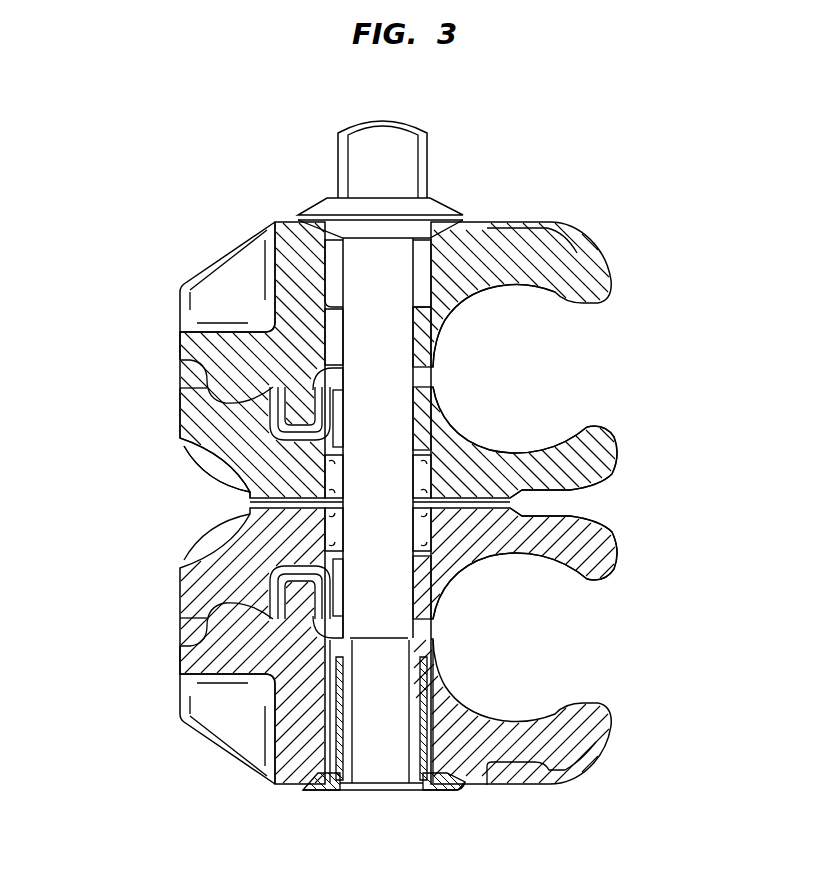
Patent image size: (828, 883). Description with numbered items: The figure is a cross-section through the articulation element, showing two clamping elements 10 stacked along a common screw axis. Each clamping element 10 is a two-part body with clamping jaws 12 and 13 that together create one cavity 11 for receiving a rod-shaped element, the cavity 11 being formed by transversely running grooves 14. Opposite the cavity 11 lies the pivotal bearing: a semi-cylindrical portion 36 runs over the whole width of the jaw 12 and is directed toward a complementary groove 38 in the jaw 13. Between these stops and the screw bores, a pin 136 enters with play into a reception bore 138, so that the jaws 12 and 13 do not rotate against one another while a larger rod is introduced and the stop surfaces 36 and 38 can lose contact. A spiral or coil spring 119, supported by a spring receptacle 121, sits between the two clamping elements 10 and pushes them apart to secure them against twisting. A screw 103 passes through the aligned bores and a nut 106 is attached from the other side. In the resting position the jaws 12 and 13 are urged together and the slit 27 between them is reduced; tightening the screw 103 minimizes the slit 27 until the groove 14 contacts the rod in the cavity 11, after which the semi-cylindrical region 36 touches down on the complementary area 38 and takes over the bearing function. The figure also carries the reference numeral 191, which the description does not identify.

The clamping element 10 is at (132, 294).
The cavity 11 is at (609, 339).
The clamping jaw 12 is at (557, 248).
The clamping jaw 13 is at (608, 460).
The groove 14 is at (553, 292).
The slit 27 is at (433, 628).
The semi-cylindrical portion 36 is at (205, 380).
The complementary groove 38 is at (185, 417).
The screw 103 is at (428, 156).
The nut 106 is at (306, 790).
The spiral or coil spring 119 is at (462, 430).
The spring receptacle 121 is at (462, 574).
The pin 136 is at (267, 340).
The reception bore 138 is at (228, 447).
The spring clip 191 is at (250, 515).